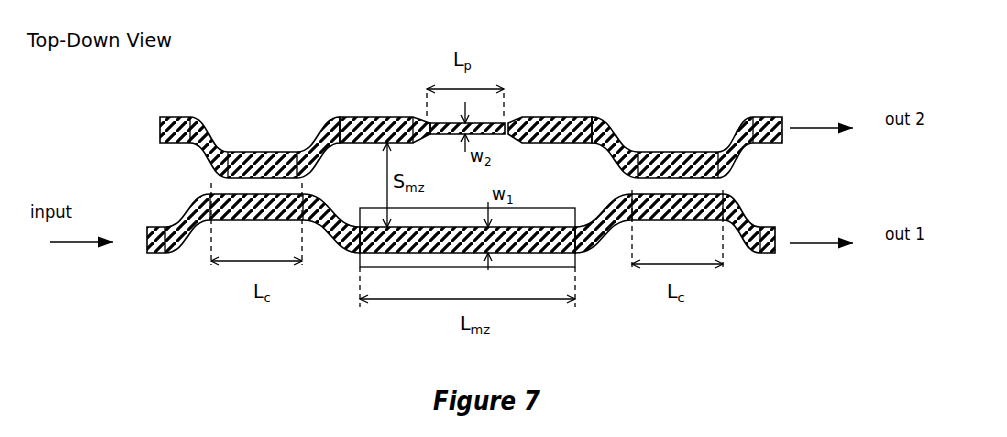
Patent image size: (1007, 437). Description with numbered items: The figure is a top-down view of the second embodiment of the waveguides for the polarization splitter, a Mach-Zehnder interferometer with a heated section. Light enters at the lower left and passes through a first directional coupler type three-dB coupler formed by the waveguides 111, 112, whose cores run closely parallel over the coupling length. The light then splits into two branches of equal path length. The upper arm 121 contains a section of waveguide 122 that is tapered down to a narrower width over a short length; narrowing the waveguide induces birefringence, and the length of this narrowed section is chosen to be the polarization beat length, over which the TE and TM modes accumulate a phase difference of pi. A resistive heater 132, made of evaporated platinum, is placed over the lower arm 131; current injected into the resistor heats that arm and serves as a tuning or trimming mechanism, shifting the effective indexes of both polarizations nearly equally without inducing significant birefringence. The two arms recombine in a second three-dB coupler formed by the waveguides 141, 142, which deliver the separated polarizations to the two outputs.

The directional coupler 111 is at (212, 143).
The directional coupler 112 is at (158, 253).
The upper arm of the interferometer 121 is at (340, 127).
The section of waveguide 122 is at (430, 127).
The lower arm of the interferometer 131 is at (338, 247).
The resistive heater 132 is at (517, 250).
The directional coupler 141 is at (680, 162).
The directional coupler 142 is at (755, 253).